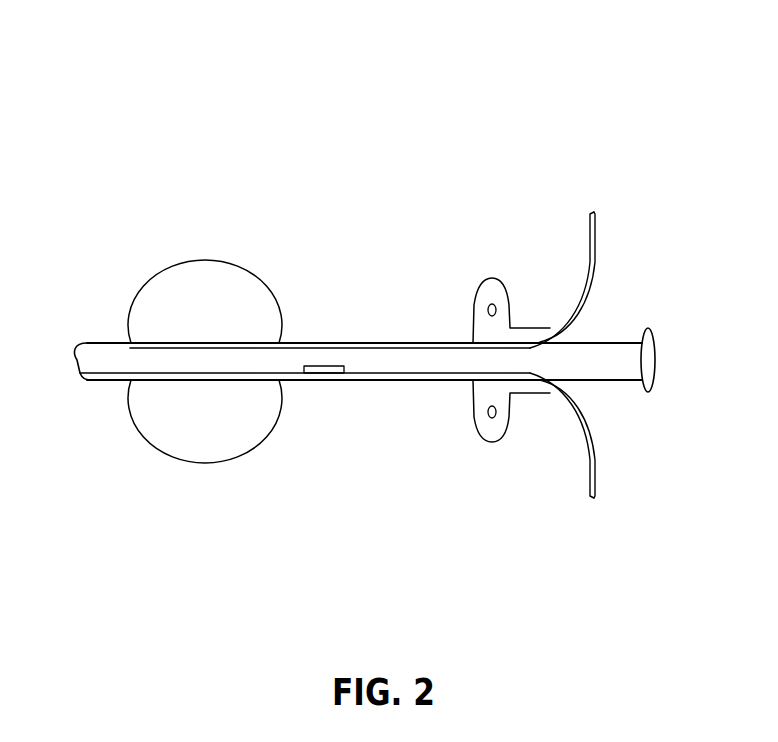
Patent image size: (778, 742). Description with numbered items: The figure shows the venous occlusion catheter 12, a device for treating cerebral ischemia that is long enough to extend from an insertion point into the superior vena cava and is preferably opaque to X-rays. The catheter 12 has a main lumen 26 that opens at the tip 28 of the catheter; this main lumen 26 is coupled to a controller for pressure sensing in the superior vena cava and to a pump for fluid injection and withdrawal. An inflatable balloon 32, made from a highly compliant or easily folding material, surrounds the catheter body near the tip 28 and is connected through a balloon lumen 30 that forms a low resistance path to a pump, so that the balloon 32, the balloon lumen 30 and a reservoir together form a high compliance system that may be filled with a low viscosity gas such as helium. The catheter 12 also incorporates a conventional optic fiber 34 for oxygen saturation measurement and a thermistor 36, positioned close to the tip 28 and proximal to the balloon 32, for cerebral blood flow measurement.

The venous occlusion catheter 12 is at (412, 110).
The main lumen 26 is at (648, 360).
The tip 28 is at (77, 362).
The balloon lumen 30 is at (593, 280).
The inflatable balloon 32 is at (225, 298).
The optic fiber 34 is at (578, 435).
The thermistor 36 is at (323, 373).